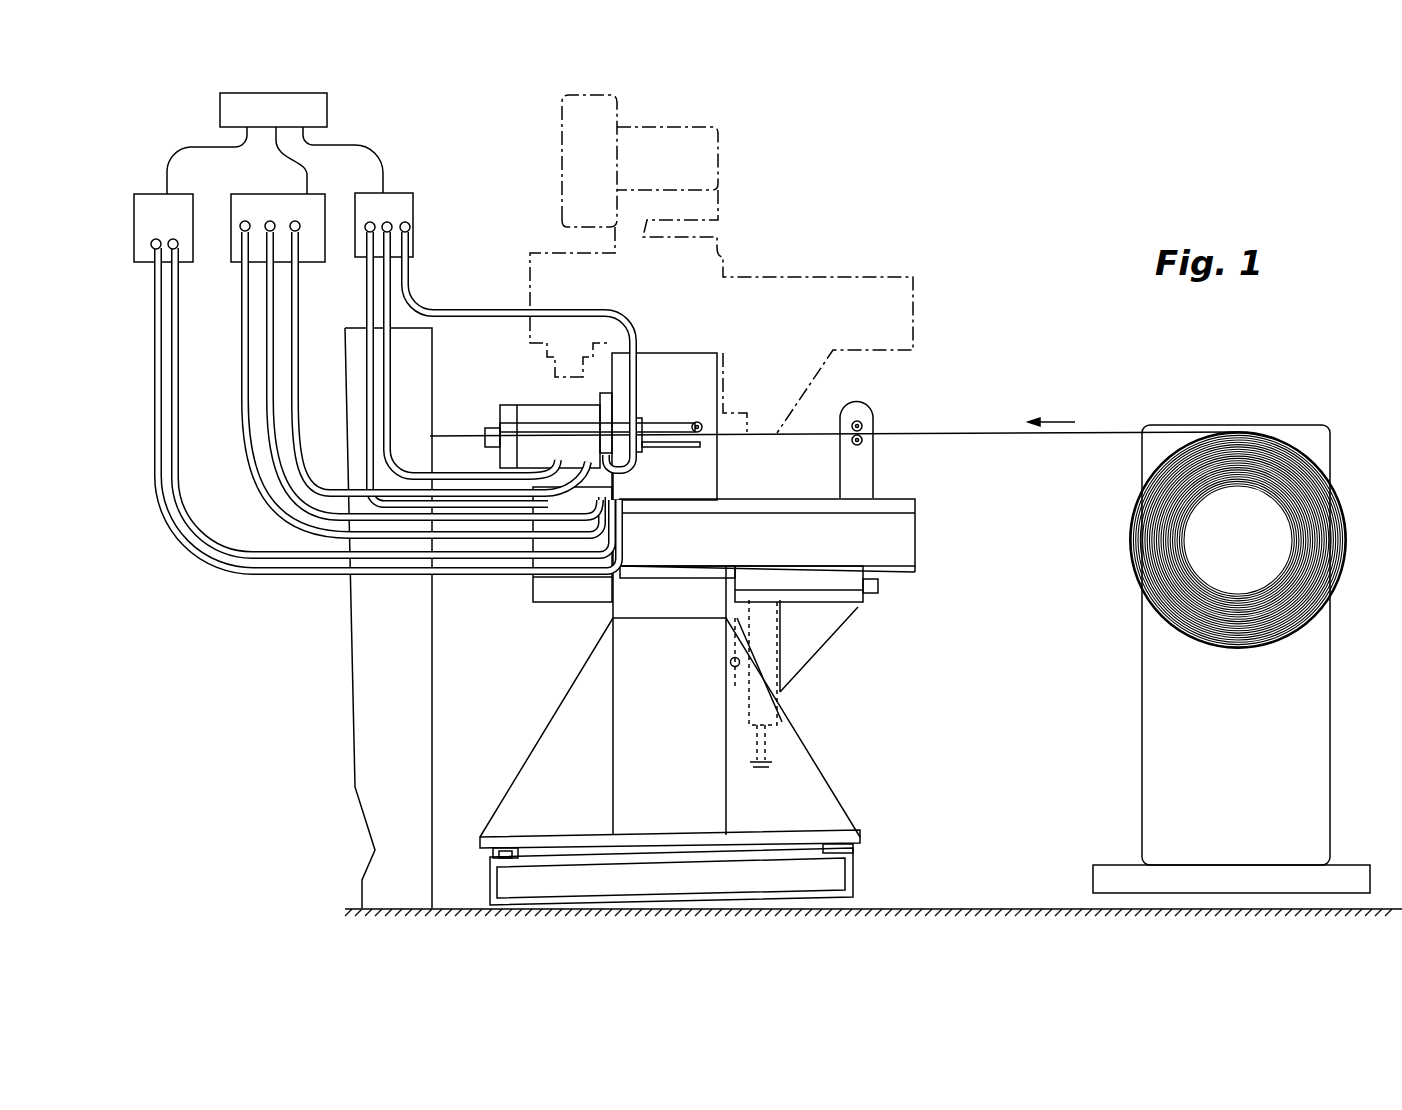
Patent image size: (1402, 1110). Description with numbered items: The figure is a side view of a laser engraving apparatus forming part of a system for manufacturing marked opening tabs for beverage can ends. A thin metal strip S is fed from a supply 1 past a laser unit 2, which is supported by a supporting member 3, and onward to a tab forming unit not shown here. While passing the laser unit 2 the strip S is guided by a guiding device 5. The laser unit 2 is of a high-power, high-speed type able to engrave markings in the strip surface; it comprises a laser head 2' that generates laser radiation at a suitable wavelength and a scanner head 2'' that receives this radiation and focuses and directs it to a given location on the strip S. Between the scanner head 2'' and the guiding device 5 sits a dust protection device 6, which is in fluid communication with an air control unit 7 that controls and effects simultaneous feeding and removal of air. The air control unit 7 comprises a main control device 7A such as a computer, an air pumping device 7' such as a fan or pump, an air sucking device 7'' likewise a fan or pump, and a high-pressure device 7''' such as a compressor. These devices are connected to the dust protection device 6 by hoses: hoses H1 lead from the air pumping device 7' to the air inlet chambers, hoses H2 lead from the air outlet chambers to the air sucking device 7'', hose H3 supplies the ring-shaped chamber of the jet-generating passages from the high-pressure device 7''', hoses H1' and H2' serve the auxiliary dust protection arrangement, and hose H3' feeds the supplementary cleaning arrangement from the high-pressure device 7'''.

The supply 1 is at (1345, 512).
The laser unit 2 is at (630, 618).
The laser head 2' is at (767, 502).
The scanner head 2'' is at (536, 547).
The supporting member 3 is at (607, 607).
The guiding device 5 is at (577, 410).
The dust protection device 6 is at (572, 455).
The air control unit 7 is at (271, 154).
The main control device 7A is at (275, 100).
The air pumping device 7' is at (413, 225).
The air sucking device 7'' is at (278, 208).
The high-pressure device 7''' is at (132, 228).
The hose H1 is at (472, 354).
The hose H1' is at (475, 351).
The hose H2 is at (435, 374).
The hose H2' is at (398, 383).
The hose H3 is at (393, 401).
The hose H3' is at (388, 433).
The metal strip S is at (940, 432).